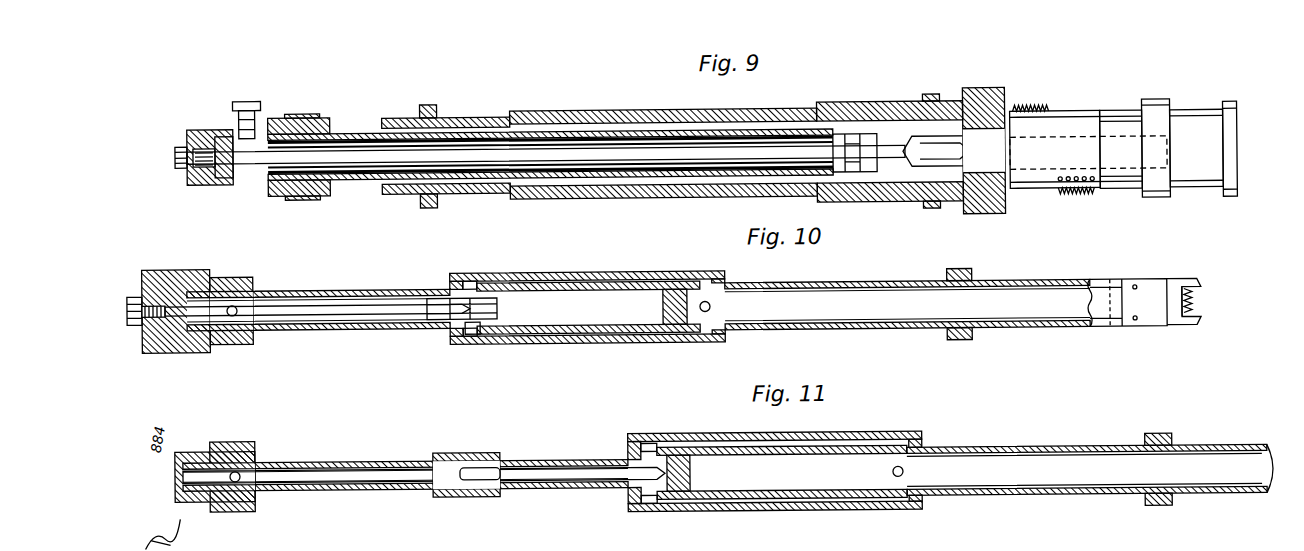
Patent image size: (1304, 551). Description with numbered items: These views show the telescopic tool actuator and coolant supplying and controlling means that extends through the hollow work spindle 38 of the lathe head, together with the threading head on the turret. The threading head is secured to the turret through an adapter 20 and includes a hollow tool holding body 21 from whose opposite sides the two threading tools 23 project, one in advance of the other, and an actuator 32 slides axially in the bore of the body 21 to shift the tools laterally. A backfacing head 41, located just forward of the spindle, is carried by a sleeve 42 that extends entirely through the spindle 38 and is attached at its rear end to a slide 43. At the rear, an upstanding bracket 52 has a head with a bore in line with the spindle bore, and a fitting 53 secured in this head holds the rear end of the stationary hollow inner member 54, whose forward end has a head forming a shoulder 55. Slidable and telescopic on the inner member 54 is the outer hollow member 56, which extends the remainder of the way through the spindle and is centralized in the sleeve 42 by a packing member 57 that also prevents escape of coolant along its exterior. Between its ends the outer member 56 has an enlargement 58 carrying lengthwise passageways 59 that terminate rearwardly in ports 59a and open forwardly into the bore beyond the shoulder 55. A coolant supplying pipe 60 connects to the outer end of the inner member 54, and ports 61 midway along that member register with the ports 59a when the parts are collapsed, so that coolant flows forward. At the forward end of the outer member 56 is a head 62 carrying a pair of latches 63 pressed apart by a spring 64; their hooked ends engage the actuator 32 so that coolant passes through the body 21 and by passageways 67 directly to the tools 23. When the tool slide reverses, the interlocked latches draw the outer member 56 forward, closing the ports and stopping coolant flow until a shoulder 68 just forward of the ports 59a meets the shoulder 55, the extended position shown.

In FIG. 9, the adapter 20 is at (1190, 120).
In FIG. 9, the tool holding body 21 is at (1078, 121).
In FIG. 9, the threading tools 23 is at (1035, 114).
In FIG. 9, the actuator 32 is at (925, 174).
In FIG. 9, the work spindle 38 is at (862, 109).
In FIG. 9, the backfacing head 41 is at (985, 98).
In FIG. 9, the sleeve 42 is at (350, 135).
In FIG. 9, the slide 43 is at (304, 116).
In FIG. 9, the bracket 52 is at (212, 186).
In FIG. 10, the bracket 52 is at (178, 270).
In FIG. 9, the fitting 53 is at (222, 138).
In FIG. 10, the fitting 53 is at (233, 346).
In FIG. 11, the fitting 53 is at (238, 452).
In FIG. 9, the inner member 54 is at (340, 165).
In FIG. 10, the inner member 54 is at (335, 307).
In FIG. 11, the inner member 54 is at (335, 471).
In FIG. 10, the shoulder 55 is at (672, 338).
In FIG. 9, the outer hollow member 56 is at (610, 197).
In FIG. 10, the outer hollow member 56 is at (420, 292).
In FIG. 11, the outer hollow member 56 is at (548, 463).
In FIG. 9, the packing member 57 is at (728, 190).
In FIG. 10, the packing member 57 is at (958, 348).
In FIG. 11, the packing member 57 is at (1150, 513).
In FIG. 10, the enlargement 58 is at (560, 277).
In FIG. 11, the enlargement 58 is at (690, 438).
In FIG. 10, the passageways 59 is at (600, 286).
In FIG. 11, the passageways 59 is at (830, 452).
In FIG. 10, the ports 59a is at (470, 290).
In FIG. 11, the ports 59a is at (632, 452).
In FIG. 9, the coolant supplying pipe 60 is at (258, 112).
In FIG. 10, the coolant supplying pipe 60 is at (237, 306).
In FIG. 10, the ports 61 is at (445, 323).
In FIG. 11, the ports 61 is at (490, 470).
In FIG. 9, the head 62 is at (862, 180).
In FIG. 10, the head 62 is at (1140, 337).
In FIG. 10, the latches 63 is at (1178, 288).
In FIG. 10, the spring 64 is at (1197, 308).
In FIG. 9, the passageways 67 is at (1058, 190).
In FIG. 10, the shoulder 68 is at (472, 338).